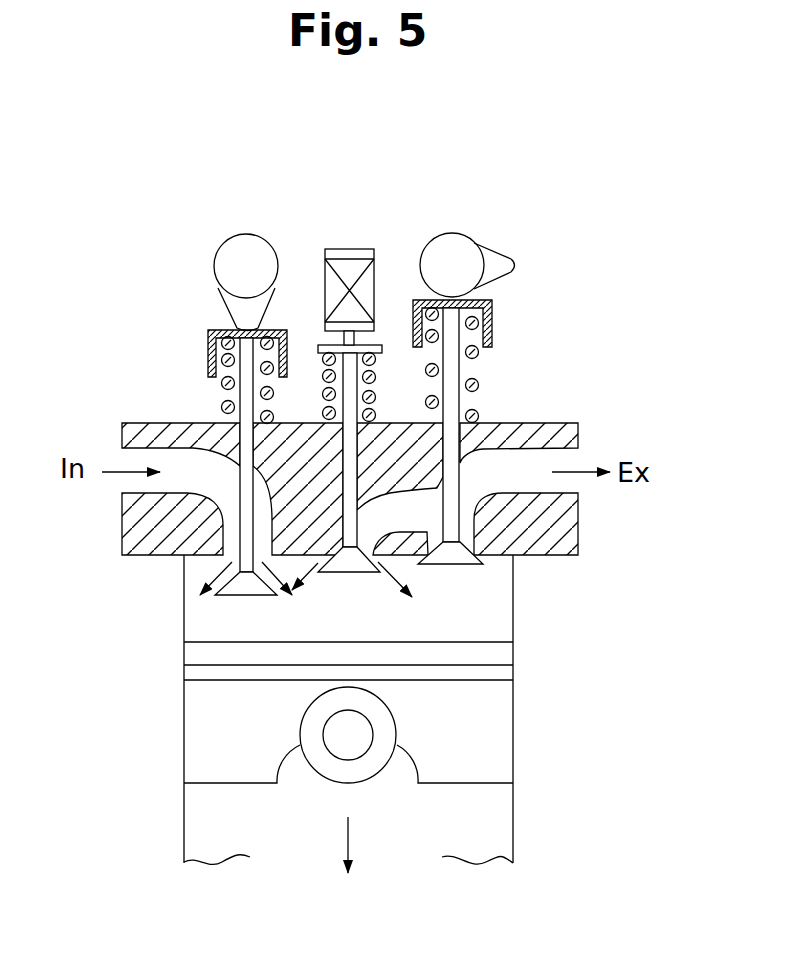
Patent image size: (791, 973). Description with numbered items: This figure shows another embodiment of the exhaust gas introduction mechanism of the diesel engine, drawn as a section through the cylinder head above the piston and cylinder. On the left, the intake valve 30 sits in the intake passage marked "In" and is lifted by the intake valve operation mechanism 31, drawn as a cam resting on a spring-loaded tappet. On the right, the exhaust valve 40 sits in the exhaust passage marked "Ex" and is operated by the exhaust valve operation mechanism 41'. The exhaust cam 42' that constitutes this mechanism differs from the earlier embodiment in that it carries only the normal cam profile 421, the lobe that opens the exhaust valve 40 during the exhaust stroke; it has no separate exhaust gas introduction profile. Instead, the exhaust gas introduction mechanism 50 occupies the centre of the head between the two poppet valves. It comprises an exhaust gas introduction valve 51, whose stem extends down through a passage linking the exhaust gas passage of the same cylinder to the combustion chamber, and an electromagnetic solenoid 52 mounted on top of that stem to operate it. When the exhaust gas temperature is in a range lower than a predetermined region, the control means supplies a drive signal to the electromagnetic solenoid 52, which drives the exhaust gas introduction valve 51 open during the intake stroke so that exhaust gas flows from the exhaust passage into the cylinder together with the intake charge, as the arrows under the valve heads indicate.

The intake valve 30 is at (245, 397).
The intake valve operation mechanism 31 is at (242, 262).
The exhaust valve 40 is at (453, 372).
The exhaust valve operation mechanism 41' is at (457, 212).
The exhaust cam 42' is at (528, 223).
The normal cam profile 421 is at (507, 265).
The exhaust gas introduction mechanism 50 is at (348, 207).
The exhaust gas introduction valve 51 is at (345, 474).
The electromagnetic solenoid 52 is at (378, 280).